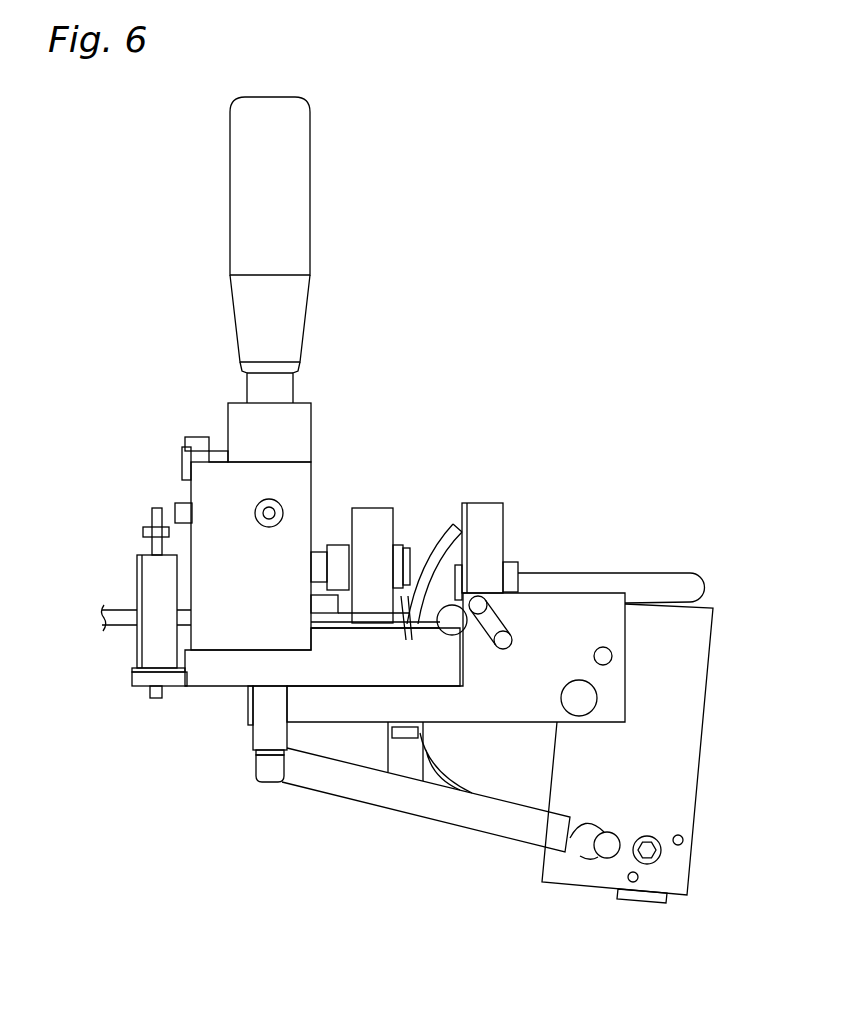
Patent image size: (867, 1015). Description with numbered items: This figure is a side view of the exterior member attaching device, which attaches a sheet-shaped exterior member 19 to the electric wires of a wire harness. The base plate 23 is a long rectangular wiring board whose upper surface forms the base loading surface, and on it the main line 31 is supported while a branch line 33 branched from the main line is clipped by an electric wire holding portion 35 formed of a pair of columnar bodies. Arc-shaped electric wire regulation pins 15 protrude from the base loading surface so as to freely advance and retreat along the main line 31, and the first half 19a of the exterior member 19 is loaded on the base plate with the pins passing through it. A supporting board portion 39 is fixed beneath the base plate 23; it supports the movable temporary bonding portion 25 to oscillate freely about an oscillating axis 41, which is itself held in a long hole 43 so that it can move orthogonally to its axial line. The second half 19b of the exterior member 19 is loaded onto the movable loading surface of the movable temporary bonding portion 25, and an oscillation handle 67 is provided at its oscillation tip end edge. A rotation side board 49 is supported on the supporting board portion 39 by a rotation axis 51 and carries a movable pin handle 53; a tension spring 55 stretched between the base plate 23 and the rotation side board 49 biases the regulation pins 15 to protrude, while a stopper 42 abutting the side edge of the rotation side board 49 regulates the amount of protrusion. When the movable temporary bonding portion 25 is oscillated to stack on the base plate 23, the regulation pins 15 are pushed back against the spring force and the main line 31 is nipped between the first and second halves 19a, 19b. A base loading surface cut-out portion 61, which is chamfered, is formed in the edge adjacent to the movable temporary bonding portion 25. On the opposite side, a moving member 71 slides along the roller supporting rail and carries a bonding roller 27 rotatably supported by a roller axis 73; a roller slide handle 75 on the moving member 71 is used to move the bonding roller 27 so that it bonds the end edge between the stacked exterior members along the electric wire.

The electric wire regulation pin 15 is at (433, 543).
The exterior member 19 is at (386, 633).
The first half of the exterior member 19a is at (375, 630).
The second half of the exterior member 19b is at (462, 513).
The base plate 23 is at (207, 692).
The movable temporary bonding portion 25 is at (520, 513).
The bonding roller 27 is at (370, 508).
The main line 31 is at (465, 632).
The branch line 33 is at (118, 609).
The electric wire holding portion 35 is at (137, 568).
The supporting board portion 39 is at (600, 602).
The oscillating axis 41 is at (478, 603).
The stopper 42 is at (579, 698).
The long hole 43 is at (505, 650).
The rotation side board 49 is at (702, 737).
The rotation axis 51 is at (612, 656).
The movable pin handle 53 is at (607, 848).
The tension spring 55 is at (345, 800).
The base loading surface cut-out portion 61 is at (416, 592).
The oscillation handle 67 is at (703, 584).
The moving member 71 is at (228, 420).
The roller axis 73 is at (318, 548).
The roller slide handle 75 is at (229, 147).